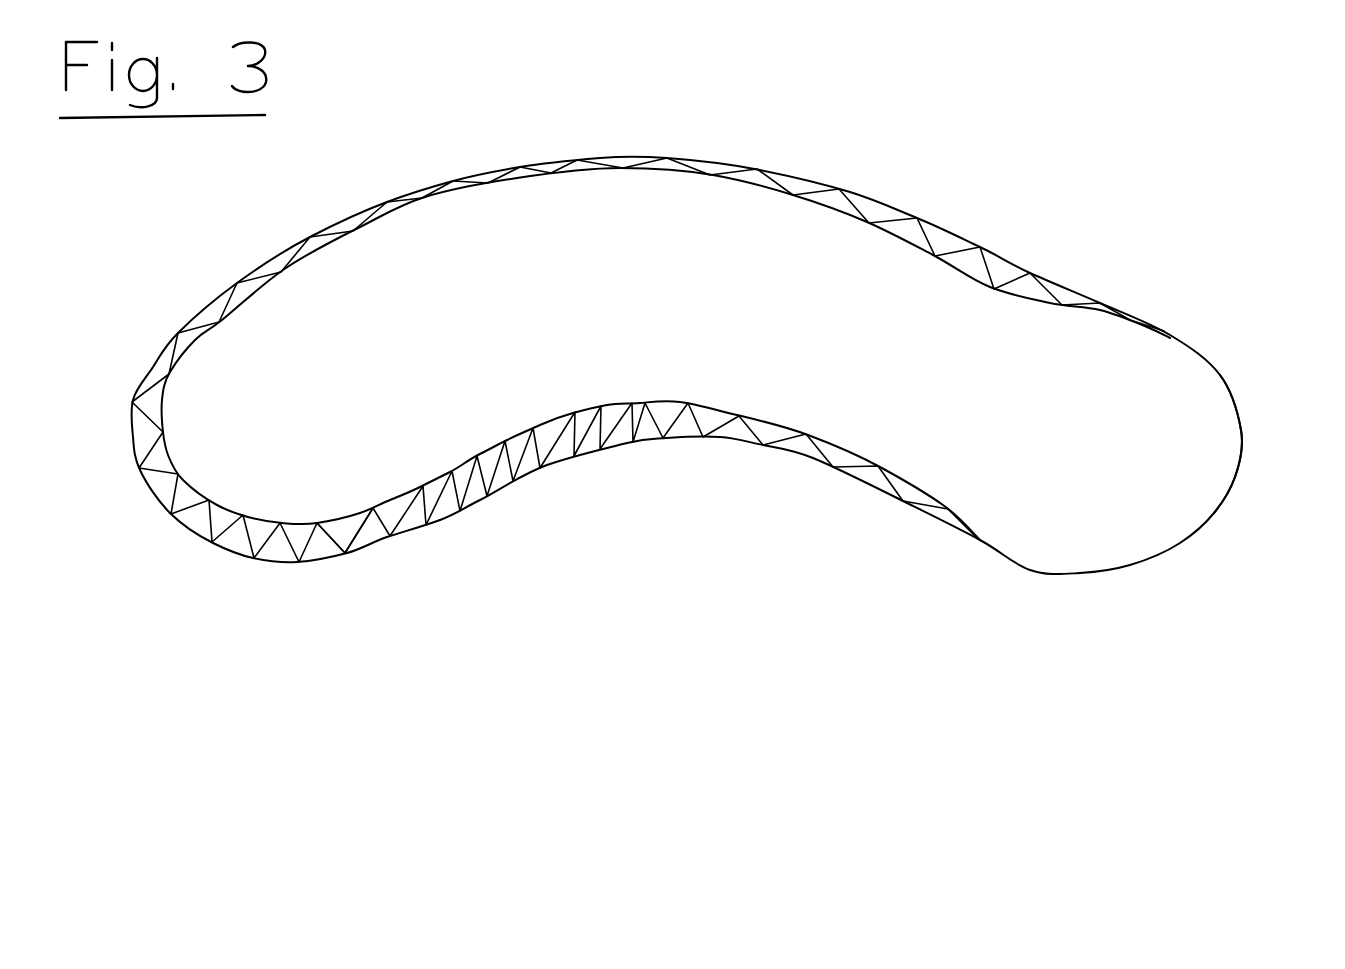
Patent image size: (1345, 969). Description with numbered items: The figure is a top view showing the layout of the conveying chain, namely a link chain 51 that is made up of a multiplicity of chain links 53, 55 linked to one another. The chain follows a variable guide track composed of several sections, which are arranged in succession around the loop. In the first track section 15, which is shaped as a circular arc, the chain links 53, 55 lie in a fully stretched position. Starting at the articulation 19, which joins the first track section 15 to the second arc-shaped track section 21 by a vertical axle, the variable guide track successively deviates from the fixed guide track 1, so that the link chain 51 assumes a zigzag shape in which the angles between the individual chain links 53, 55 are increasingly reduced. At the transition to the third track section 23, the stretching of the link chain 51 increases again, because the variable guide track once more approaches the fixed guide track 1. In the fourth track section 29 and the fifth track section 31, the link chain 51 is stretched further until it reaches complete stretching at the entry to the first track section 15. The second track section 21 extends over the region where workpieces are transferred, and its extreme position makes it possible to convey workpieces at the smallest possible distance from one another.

The fixed guide track 1 is at (802, 458).
The first track section 15 is at (1196, 562).
The articulation 19 is at (983, 550).
The second arc-shaped track section 21 is at (696, 468).
The third track section 23 is at (191, 574).
The fourth track section 29 is at (330, 202).
The fifth track section 31 is at (955, 200).
The link chain 51 is at (487, 480).
The chain link 53 is at (360, 540).
The chain link 55 is at (368, 538).